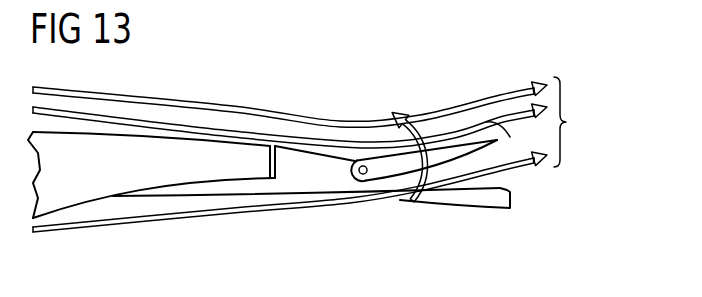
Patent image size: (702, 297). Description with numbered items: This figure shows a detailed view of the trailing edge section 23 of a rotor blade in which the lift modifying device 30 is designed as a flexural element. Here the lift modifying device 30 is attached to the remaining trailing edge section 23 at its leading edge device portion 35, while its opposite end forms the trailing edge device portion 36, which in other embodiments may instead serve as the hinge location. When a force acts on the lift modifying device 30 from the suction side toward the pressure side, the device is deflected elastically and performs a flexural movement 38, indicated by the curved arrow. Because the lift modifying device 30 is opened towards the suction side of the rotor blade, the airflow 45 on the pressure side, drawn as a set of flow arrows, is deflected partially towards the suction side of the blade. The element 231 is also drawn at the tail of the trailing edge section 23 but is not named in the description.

The trailing edge section 23 is at (329, 94).
The lift modifying device 30 is at (390, 167).
The leading edge device portion 35 is at (356, 182).
The trailing edge device portion 36 is at (510, 137).
The flexural movement 38 is at (423, 130).
The airflow 45 is at (314, 154).
The tail section 231 is at (513, 201).